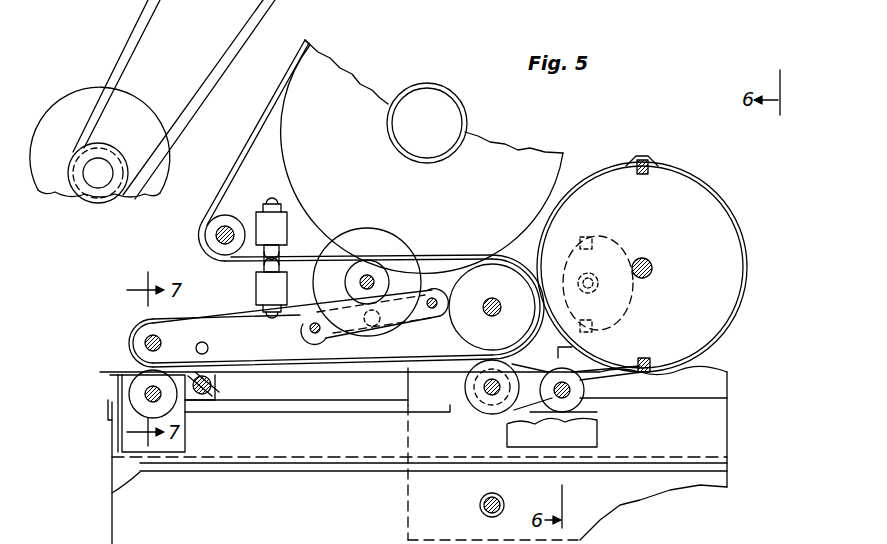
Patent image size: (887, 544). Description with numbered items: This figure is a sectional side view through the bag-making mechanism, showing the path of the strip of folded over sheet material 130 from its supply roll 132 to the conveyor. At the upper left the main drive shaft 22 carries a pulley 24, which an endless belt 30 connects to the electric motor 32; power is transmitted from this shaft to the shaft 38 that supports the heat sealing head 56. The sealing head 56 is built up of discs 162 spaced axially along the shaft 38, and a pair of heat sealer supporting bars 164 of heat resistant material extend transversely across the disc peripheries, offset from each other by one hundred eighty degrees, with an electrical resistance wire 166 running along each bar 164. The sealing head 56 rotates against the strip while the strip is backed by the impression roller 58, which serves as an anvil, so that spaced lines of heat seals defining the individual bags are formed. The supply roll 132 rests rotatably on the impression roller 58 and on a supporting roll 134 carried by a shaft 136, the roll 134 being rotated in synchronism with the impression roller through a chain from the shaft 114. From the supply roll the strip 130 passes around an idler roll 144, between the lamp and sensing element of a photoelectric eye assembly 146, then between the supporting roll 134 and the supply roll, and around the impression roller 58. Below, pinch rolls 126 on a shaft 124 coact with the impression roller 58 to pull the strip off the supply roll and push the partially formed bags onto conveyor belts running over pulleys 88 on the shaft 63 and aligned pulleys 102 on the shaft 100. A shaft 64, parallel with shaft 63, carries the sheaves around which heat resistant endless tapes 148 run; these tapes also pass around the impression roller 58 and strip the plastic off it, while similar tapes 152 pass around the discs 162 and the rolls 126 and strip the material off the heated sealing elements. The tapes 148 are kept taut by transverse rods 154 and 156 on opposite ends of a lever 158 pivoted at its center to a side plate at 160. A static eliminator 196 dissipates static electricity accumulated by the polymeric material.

The main drive shaft 22 is at (480, 507).
The pulley 24 is at (295, 99).
The endless belt 30 is at (158, 8).
The electric motor 32 is at (77, 122).
The shaft 38 is at (651, 262).
The heat sealing head 56 is at (698, 181).
The impression roller 58 is at (493, 278).
The shaft 63 is at (145, 395).
The shaft 64 is at (145, 345).
The pulleys 88 is at (158, 405).
The shaft 100 is at (552, 433).
The pulleys 102 is at (585, 390).
The shaft 114 is at (492, 317).
The shaft 124 is at (489, 398).
The pinch rolls 126 is at (470, 383).
The strip of folded over sheet material 130 is at (263, 127).
The supply roll 132 is at (422, 156).
The supporting roll 134 is at (380, 277).
The shaft 136 is at (368, 275).
The idler roll 144 is at (210, 238).
The photoelectric eye assembly 146 is at (275, 225).
The endless tapes or cords 148 is at (222, 320).
The tapes 152 is at (607, 360).
The transverse rod 154 is at (436, 297).
The transverse rod 156 is at (318, 333).
The lever 158 is at (311, 333).
The pivot 160 is at (377, 317).
The discs 162 is at (712, 215).
The heat sealer supporting bars 164 is at (651, 361).
The electrical resistance wire 166 is at (646, 157).
The static eliminator 196 is at (210, 346).